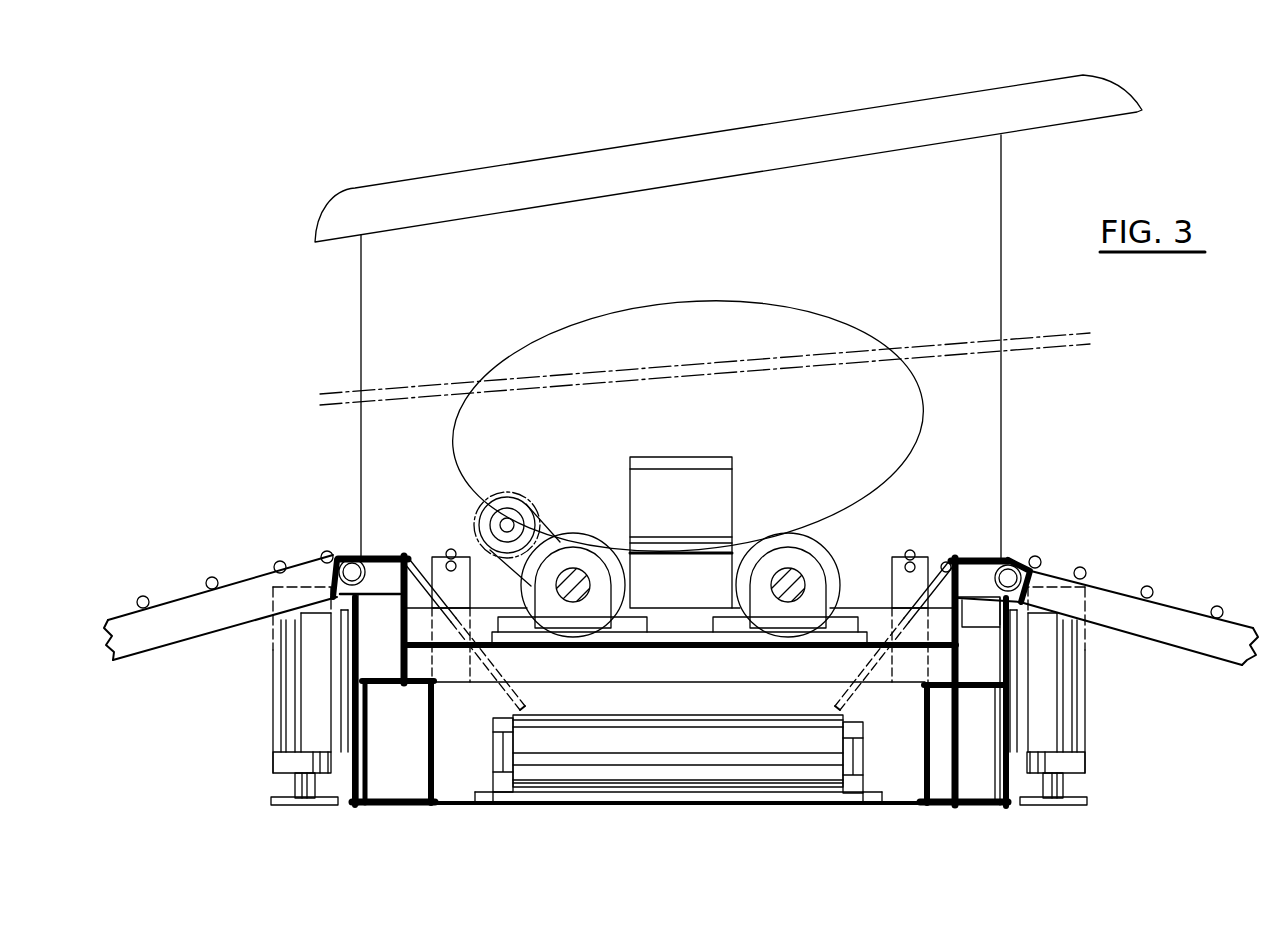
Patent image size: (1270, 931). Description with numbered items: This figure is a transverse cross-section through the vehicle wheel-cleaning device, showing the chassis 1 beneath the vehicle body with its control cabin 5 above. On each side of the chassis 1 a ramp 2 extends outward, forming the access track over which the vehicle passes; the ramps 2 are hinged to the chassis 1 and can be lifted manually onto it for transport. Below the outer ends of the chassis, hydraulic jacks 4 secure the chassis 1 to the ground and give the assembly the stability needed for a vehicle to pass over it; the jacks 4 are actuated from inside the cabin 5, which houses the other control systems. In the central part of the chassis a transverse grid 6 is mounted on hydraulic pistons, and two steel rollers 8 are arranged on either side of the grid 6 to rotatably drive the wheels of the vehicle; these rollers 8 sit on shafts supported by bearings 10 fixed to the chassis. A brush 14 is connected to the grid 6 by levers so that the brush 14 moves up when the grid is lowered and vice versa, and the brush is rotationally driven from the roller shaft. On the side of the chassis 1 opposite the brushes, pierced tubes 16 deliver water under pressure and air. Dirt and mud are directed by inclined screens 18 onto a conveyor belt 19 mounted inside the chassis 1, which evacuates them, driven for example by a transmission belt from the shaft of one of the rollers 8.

The chassis 1 is at (967, 808).
The ramps 2 is at (1058, 565).
The hydraulic jacks 4 is at (1072, 742).
The cabin 5 is at (988, 202).
The grid 6 is at (648, 538).
The steel rollers 8 is at (830, 588).
The bearings 10 is at (795, 563).
The brush 14 is at (488, 510).
The pierced tubes 16 is at (947, 562).
The inclined screens 18 is at (926, 590).
The conveyor belt 19 is at (603, 765).